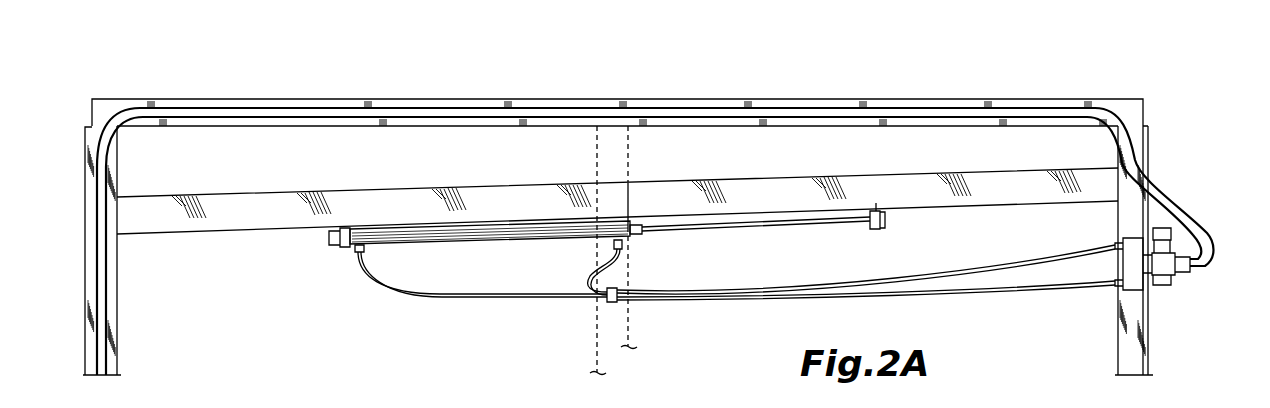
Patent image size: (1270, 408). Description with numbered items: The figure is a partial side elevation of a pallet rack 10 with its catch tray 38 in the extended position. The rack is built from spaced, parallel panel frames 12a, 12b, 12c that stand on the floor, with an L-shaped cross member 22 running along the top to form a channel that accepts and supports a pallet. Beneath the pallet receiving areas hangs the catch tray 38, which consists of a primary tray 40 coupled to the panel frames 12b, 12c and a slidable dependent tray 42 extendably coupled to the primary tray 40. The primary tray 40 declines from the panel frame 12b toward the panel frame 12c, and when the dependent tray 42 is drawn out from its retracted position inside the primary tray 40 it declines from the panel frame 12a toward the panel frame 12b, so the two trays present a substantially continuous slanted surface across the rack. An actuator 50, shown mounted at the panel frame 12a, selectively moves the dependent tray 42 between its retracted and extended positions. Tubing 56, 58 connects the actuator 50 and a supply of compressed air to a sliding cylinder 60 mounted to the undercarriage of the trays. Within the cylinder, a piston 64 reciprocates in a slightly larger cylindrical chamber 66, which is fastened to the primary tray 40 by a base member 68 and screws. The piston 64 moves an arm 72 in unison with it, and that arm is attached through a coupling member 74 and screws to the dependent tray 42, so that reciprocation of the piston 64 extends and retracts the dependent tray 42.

The pallet rack 10 is at (1162, 88).
The cross member 22 is at (425, 100).
The panel frame 12a is at (1118, 342).
The panel frame 12b is at (628, 348).
The panel frame 12c is at (117, 322).
The catch tray 38 is at (239, 198).
The primary tray 40 is at (218, 235).
The slidable dependent tray 42 is at (955, 207).
The actuator 50 is at (1170, 270).
The tubing 56 is at (101, 271).
The tubing 58 is at (957, 293).
The sliding cylinder 60 is at (425, 244).
The piston 64 is at (634, 237).
The cylindrical chamber 66 is at (508, 244).
The base member 68 is at (330, 238).
The piston rod 72 is at (735, 230).
The coupling member 74 is at (882, 229).